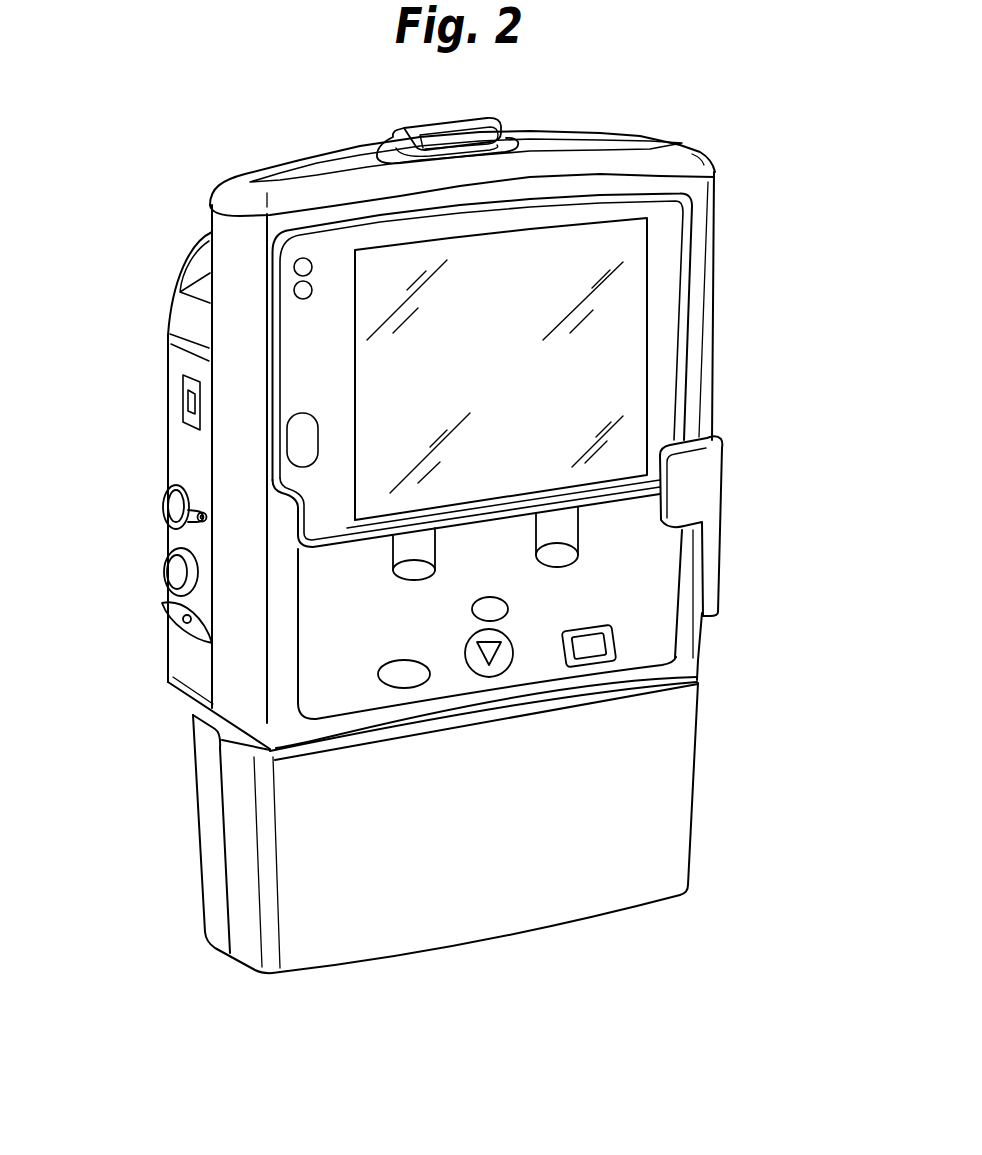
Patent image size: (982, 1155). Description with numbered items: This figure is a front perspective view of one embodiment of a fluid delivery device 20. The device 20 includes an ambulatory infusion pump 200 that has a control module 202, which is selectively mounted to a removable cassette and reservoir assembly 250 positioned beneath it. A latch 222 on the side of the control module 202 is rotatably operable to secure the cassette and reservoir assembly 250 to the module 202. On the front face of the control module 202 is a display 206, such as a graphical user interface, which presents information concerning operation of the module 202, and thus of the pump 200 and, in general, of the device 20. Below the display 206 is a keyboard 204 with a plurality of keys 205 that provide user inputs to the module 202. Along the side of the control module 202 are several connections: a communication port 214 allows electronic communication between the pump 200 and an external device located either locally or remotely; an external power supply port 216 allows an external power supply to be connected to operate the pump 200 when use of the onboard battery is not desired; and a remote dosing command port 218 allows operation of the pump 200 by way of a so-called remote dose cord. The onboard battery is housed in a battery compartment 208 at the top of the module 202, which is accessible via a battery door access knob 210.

The fluid delivery device 20 is at (503, 984).
The ambulatory infusion pump 200 is at (209, 146).
The control module 202 is at (713, 327).
The keyboard 204 is at (610, 590).
The keys 205 is at (630, 643).
The display 206 is at (640, 377).
The battery compartment 208 is at (306, 168).
The battery door access knob 210 is at (476, 124).
The communication port 214 is at (185, 407).
The external power supply port 216 is at (180, 575).
The remote dosing command port 218 is at (178, 509).
The latch 222 is at (700, 492).
The cassette and reservoir assembly 250 is at (186, 911).